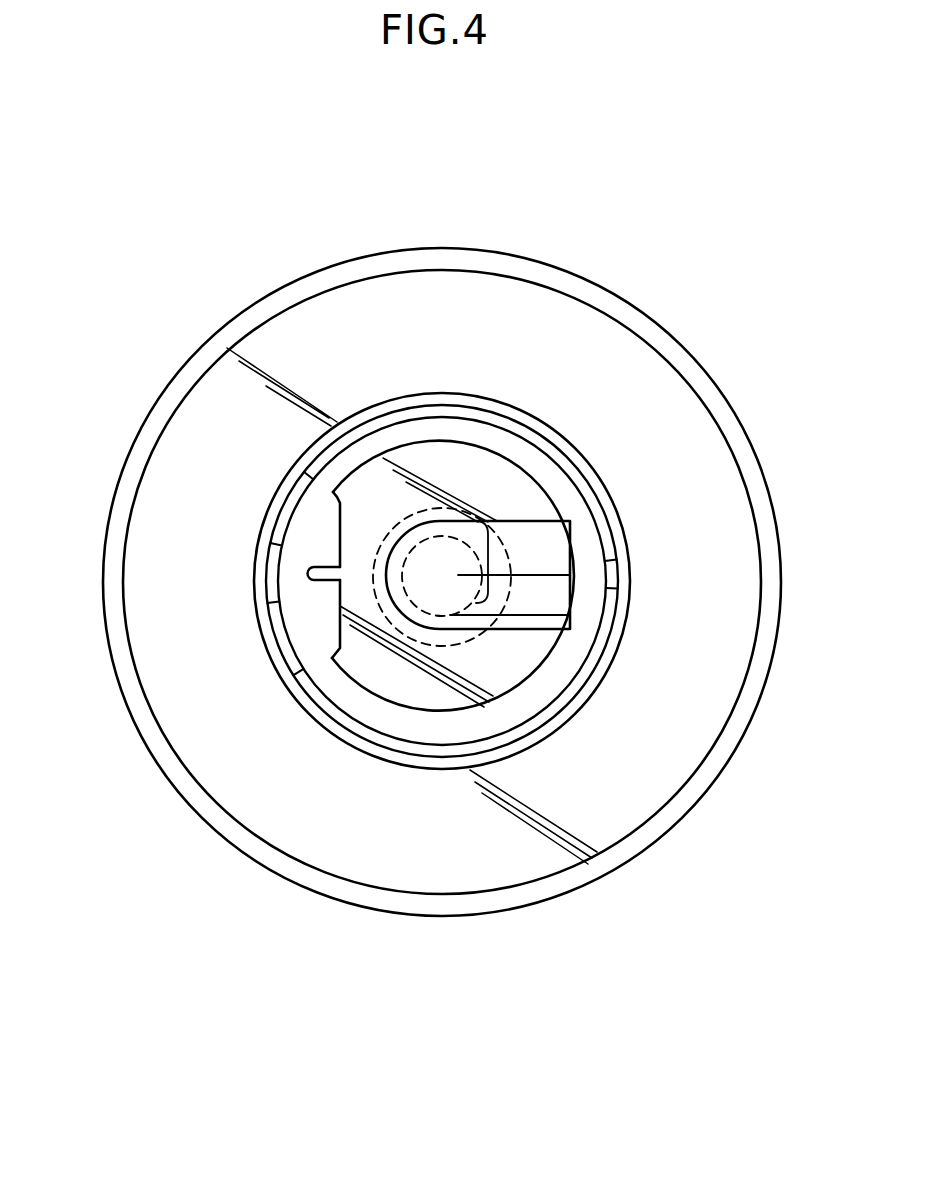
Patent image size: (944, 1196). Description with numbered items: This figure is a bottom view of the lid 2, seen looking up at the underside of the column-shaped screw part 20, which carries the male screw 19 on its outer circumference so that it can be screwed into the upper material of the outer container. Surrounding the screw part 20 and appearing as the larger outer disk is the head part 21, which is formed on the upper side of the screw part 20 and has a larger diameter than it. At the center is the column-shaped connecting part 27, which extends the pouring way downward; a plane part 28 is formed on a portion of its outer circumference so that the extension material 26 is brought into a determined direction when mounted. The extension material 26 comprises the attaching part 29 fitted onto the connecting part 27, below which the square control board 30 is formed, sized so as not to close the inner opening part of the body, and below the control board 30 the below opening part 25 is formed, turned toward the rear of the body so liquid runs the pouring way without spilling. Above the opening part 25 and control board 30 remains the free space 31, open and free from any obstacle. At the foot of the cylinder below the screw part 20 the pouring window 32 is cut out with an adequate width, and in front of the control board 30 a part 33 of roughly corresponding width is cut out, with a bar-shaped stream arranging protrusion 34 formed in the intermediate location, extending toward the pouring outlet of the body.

The lid 2 is at (652, 251).
The male screw 19 is at (627, 519).
The screw part 20 is at (600, 667).
The head part 21 is at (730, 395).
The below opening part 25 is at (447, 603).
The extension material 26 is at (457, 642).
The connecting part 27 is at (473, 537).
The plane part 28 is at (482, 532).
The attaching part 29 is at (410, 640).
The control board 30 is at (373, 663).
The free space 31 is at (290, 660).
The pouring window 32 is at (270, 528).
The cut-out part 33 is at (340, 608).
The stream arranging protrusion 34 is at (307, 577).